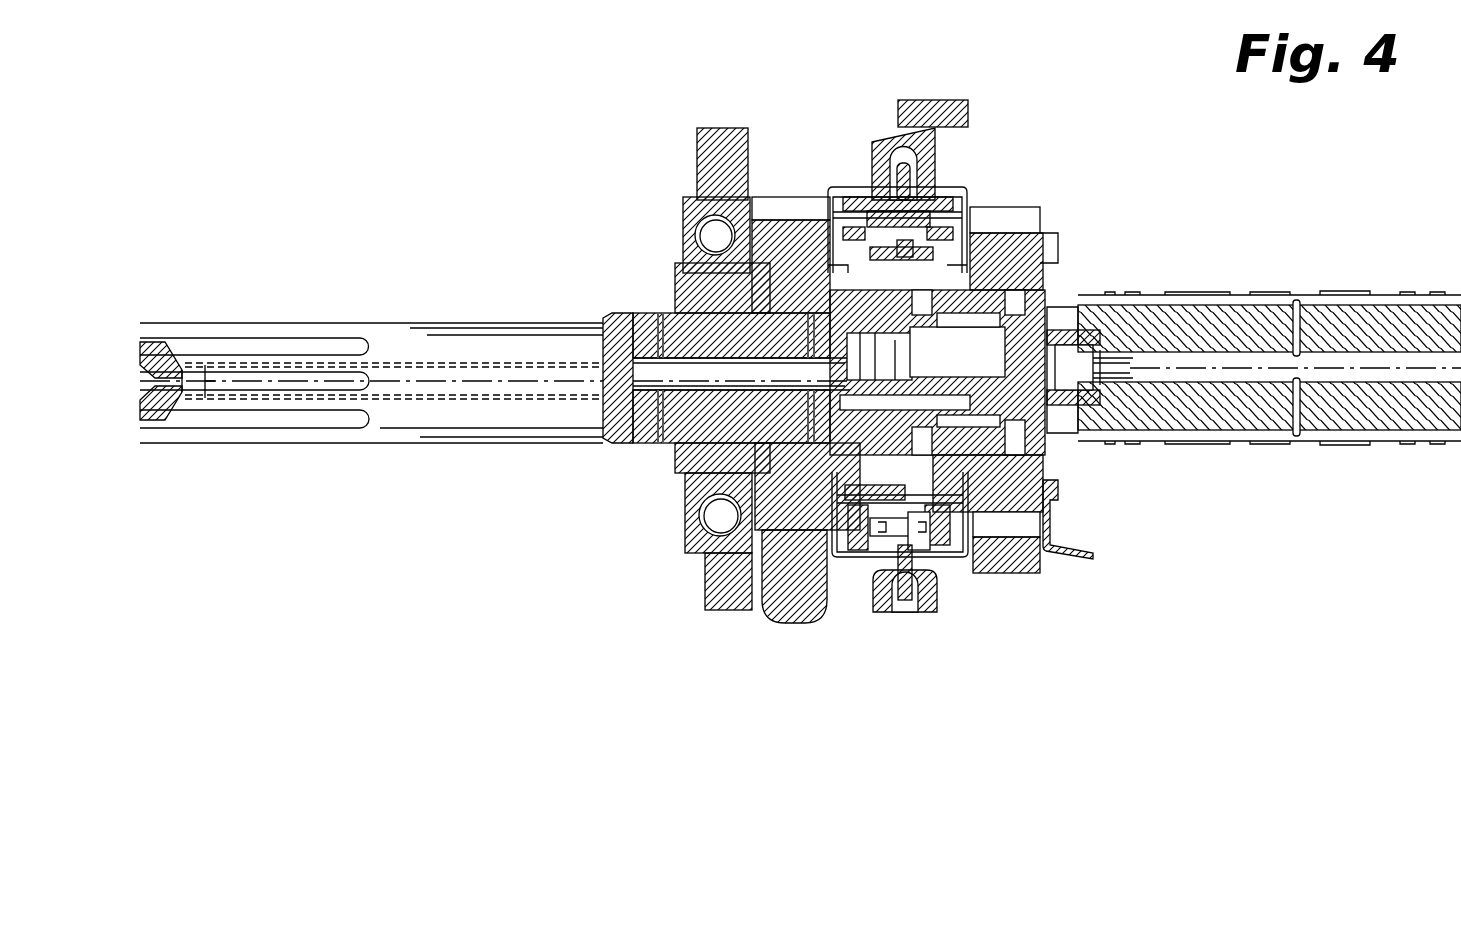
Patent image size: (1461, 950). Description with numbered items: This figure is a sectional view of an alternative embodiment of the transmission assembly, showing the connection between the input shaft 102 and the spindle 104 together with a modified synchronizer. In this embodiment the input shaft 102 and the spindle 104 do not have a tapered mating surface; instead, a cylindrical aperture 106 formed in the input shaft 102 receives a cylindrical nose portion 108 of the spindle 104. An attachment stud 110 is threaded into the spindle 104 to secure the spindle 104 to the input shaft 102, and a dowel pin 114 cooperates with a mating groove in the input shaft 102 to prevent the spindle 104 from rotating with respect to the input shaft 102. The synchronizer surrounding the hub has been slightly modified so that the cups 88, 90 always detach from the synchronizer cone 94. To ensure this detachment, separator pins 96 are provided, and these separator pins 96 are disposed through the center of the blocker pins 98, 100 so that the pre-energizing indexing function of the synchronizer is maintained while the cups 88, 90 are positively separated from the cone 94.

The cup 88 is at (960, 553).
The cup 90 is at (845, 557).
The synchronizer cone 94 is at (865, 555).
The separator pins 96 is at (873, 190).
The blocker pin 98 is at (858, 192).
The blocker pin 100 is at (900, 548).
The input shaft 102 is at (567, 425).
The spindle 104 is at (1013, 372).
The cylindrical aperture 106 is at (845, 405).
The cylindrical nose portion 108 is at (1000, 547).
The attachment stud 110 is at (497, 385).
The dowel pin 114 is at (857, 330).